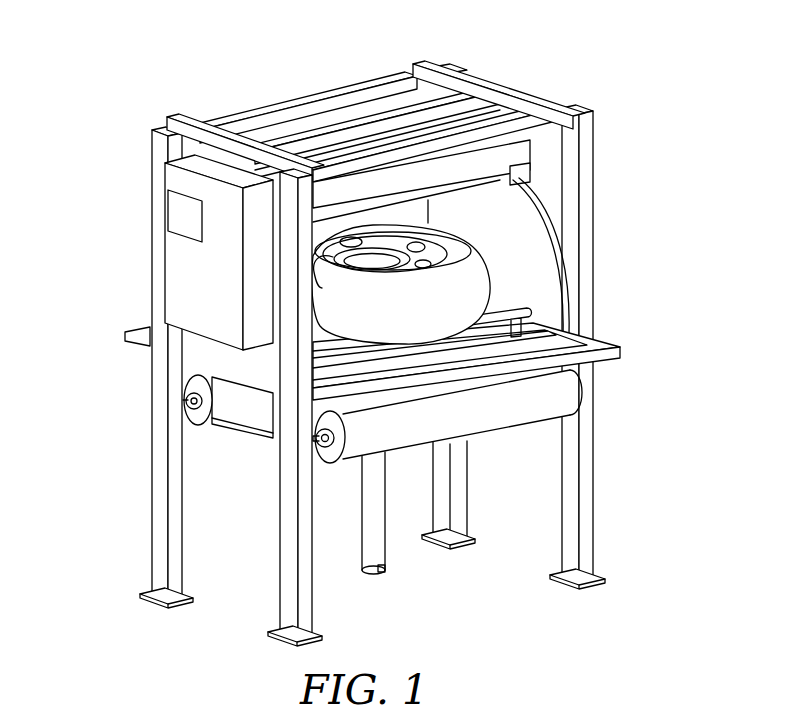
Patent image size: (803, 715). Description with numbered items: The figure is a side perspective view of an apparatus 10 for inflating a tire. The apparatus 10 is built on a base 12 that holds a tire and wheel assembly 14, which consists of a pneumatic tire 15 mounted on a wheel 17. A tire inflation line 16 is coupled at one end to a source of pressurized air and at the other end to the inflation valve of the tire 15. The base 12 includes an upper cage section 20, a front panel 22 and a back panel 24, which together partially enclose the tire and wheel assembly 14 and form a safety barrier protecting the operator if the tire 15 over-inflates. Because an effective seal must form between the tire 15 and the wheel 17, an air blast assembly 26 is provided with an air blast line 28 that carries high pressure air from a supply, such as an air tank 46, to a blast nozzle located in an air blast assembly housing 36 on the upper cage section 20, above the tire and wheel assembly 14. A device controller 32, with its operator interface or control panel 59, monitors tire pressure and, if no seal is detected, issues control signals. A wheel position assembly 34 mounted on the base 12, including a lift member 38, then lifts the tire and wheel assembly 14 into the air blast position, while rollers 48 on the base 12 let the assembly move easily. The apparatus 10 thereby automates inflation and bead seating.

The apparatus 10 is at (375, 351).
The base 12 is at (163, 357).
The tire and wheel assembly 14 is at (494, 270).
The pneumatic tire 15 is at (476, 298).
The tire inflation line 16 is at (313, 272).
The wheel 17 is at (443, 250).
The upper cage section 20 is at (334, 90).
The front panel 22 is at (220, 147).
The back panel 24 is at (537, 100).
The air blast assembly 26 is at (379, 120).
The air blast line 28 is at (530, 195).
The device controller 32 is at (182, 252).
The wheel position assembly 34 is at (412, 550).
The air blast assembly housing 36 is at (497, 157).
The lift member 38 is at (377, 548).
The air tank 46 is at (552, 400).
The rollers 48 is at (527, 297).
The control panel 59 is at (175, 222).